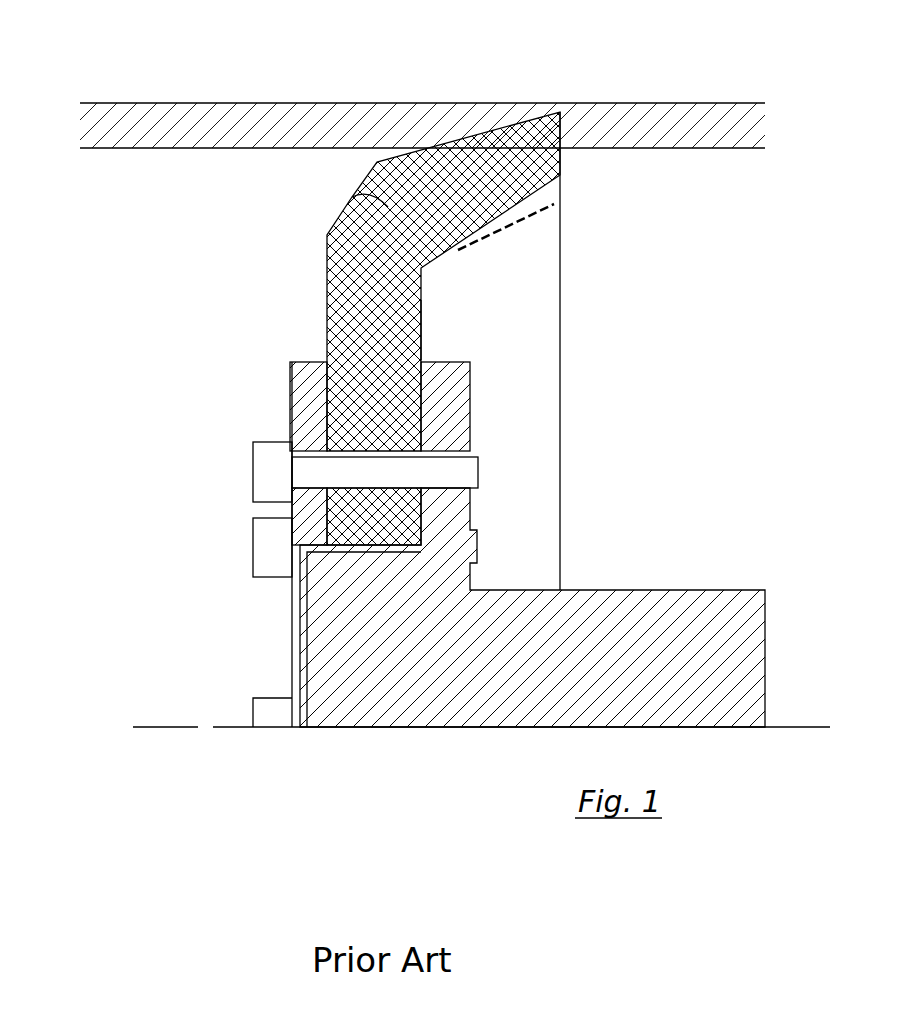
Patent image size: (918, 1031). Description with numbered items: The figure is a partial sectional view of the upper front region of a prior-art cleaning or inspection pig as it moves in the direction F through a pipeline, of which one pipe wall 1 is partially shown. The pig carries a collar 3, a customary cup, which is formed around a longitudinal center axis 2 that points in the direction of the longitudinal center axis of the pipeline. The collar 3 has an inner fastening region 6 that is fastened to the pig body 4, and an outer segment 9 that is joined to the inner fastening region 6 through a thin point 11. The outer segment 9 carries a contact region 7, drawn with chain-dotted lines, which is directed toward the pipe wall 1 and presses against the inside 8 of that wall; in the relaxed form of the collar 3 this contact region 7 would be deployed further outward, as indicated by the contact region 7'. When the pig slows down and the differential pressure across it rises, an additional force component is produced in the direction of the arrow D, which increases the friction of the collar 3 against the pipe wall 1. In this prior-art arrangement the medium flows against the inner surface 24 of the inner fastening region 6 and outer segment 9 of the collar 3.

The pipe wall 1 is at (297, 102).
The longitudinal center axis 2 is at (183, 727).
The collar 3 is at (300, 313).
The pig body 4 is at (407, 702).
The inner fastening region 6 is at (320, 356).
The contact region 7 is at (495, 79).
The contact region in relaxed form 7' is at (554, 58).
The inside of the pipe wall 8 is at (690, 149).
The outer segment 9 is at (353, 197).
The thin point 11 is at (427, 290).
The inner surface 24 is at (421, 355).
The direction of additional force component D is at (600, 362).
The direction of pig movement F is at (70, 673).